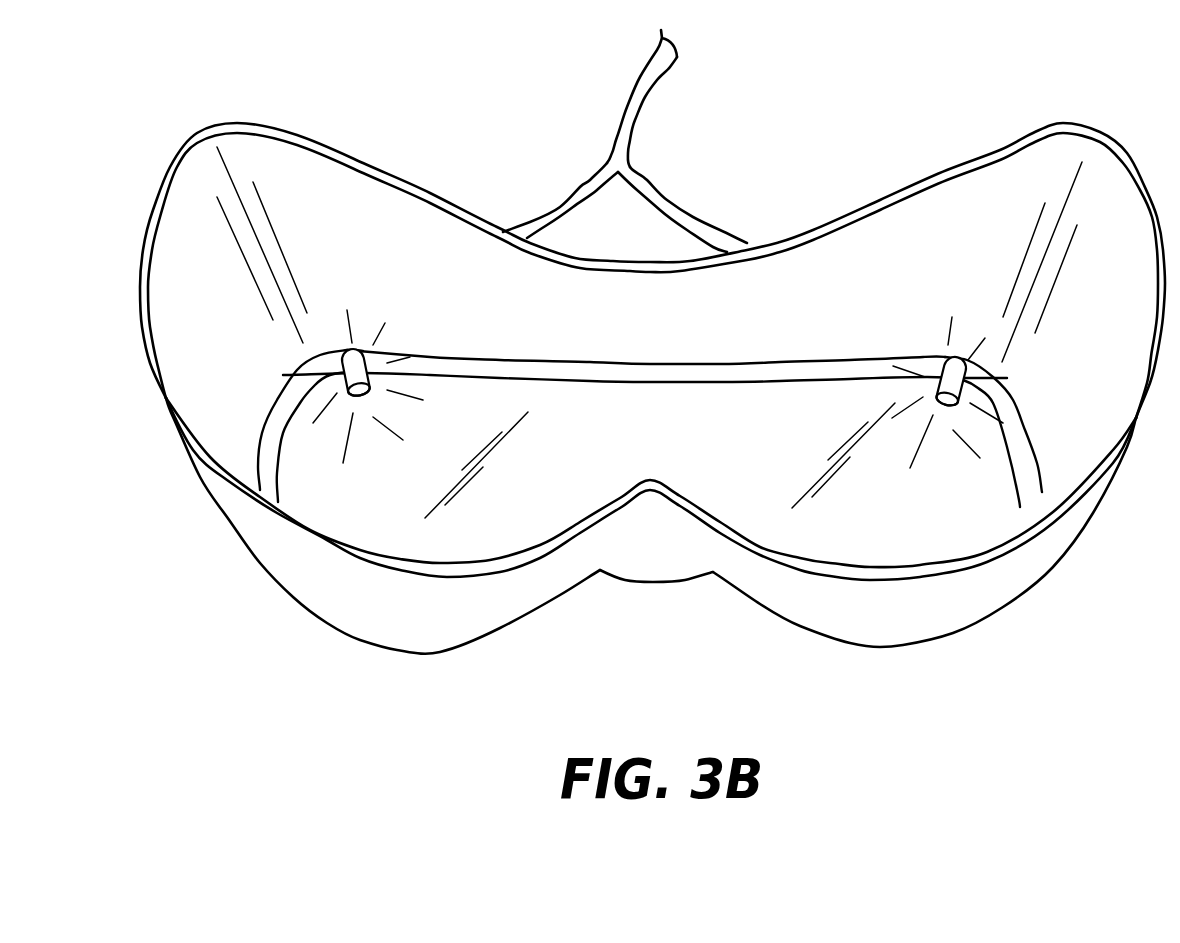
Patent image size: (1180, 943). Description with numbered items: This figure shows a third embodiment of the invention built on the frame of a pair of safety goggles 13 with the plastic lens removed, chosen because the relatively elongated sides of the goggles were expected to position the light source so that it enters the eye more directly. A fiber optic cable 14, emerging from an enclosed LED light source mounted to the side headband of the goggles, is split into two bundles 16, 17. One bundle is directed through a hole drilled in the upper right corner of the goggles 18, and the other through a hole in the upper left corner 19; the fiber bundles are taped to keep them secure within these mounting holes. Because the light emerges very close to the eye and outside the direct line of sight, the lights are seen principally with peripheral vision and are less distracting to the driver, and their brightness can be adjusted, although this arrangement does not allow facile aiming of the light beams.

The safety goggles 13 is at (880, 640).
The fiber optic cable 14 is at (640, 97).
The bundle 16 is at (698, 227).
The bundle 17 is at (547, 210).
The upper right corner of the goggles 18 is at (937, 362).
The upper left corner 19 is at (327, 365).